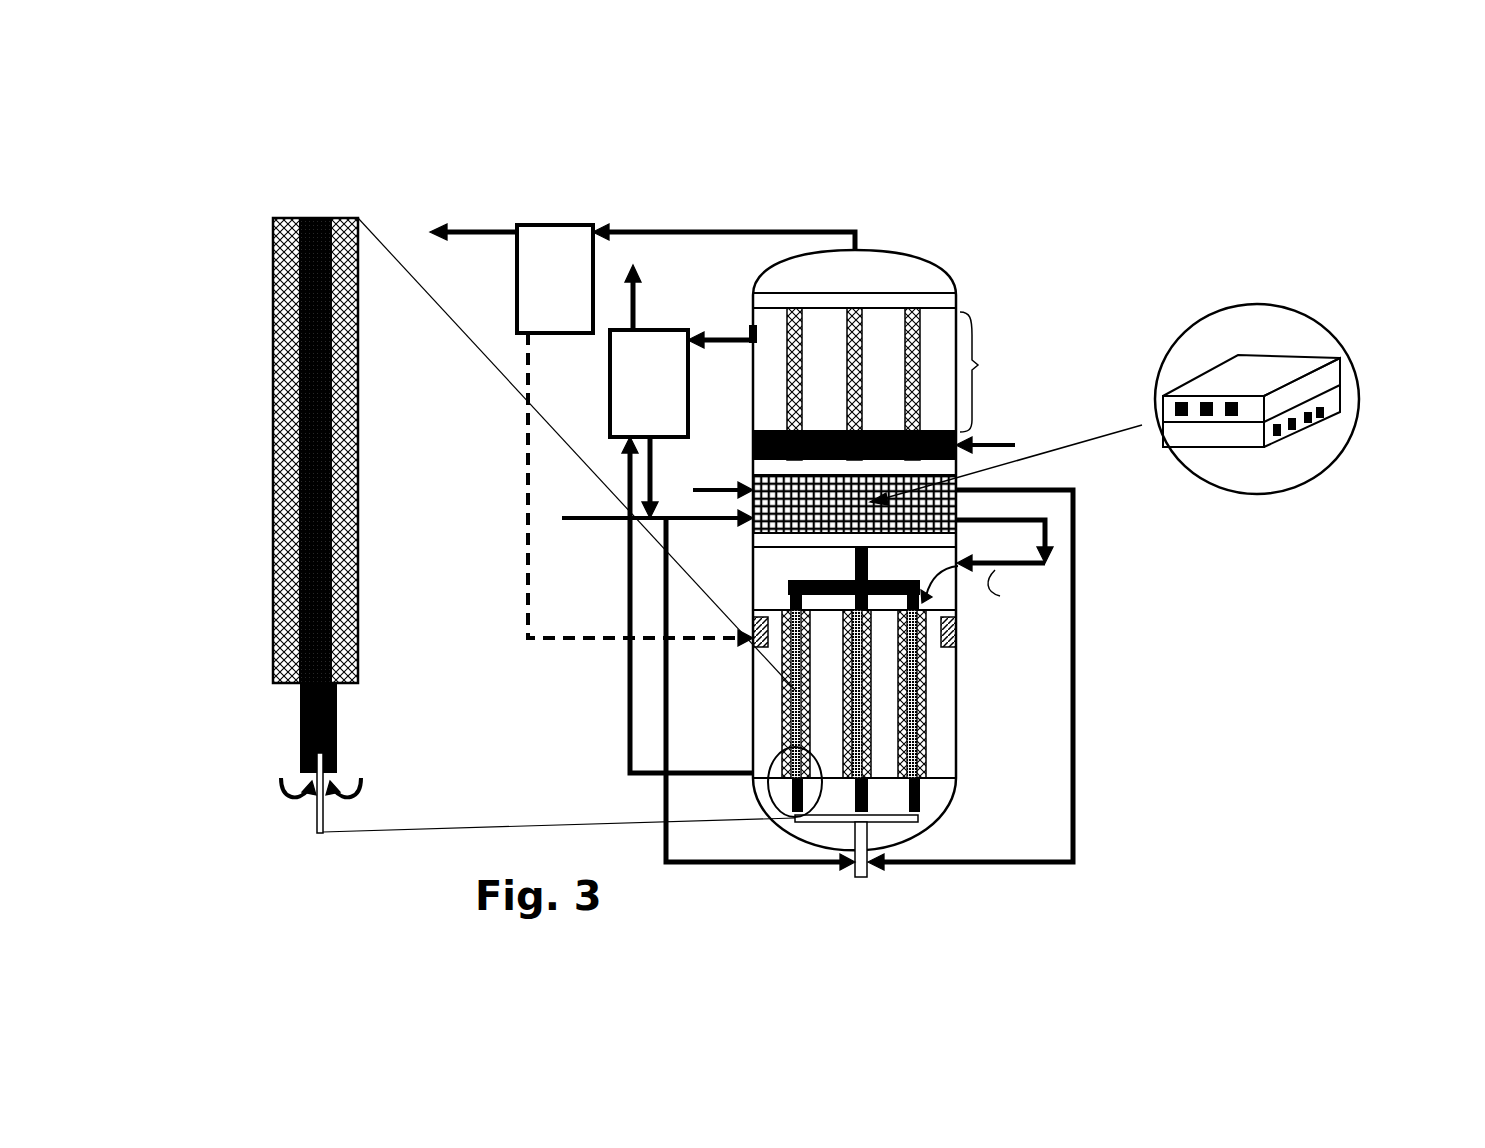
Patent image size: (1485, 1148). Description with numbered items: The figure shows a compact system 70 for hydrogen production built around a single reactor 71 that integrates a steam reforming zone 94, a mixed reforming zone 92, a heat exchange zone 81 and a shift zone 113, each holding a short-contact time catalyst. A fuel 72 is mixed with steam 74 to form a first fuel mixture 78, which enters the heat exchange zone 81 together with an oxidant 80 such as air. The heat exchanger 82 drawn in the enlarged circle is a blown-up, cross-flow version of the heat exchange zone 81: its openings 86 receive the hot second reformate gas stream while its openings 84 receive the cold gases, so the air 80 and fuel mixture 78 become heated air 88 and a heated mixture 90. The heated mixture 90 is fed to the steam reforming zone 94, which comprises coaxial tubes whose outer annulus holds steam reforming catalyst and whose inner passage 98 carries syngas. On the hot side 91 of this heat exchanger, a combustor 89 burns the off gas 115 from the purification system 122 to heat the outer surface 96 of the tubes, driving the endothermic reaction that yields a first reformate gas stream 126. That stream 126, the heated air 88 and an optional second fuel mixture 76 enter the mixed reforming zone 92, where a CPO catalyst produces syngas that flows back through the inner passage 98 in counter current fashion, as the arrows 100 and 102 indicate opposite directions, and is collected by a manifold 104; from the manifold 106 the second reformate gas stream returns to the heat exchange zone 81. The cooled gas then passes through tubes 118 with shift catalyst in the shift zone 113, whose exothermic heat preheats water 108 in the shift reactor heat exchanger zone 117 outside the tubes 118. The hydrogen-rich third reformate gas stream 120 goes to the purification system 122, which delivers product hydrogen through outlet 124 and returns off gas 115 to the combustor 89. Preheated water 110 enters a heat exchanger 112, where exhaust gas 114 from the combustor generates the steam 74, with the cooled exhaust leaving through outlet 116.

The system for hydrogen production 70 is at (170, 170).
The single reactor 71 is at (910, 258).
The fuel 72 is at (590, 522).
The steam 74 is at (655, 470).
The second fuel mixture 76 is at (697, 868).
The first fuel mixture 78 is at (690, 520).
The oxidant 80 is at (717, 482).
The heat exchange zone 81 is at (975, 486).
The heat exchanger 82 is at (1290, 362).
The openings 84 is at (1200, 400).
The openings 86 is at (1283, 436).
The heated air 88 is at (1078, 678).
The combustor 89 is at (957, 640).
The heated mixture 90 is at (1003, 601).
The hot side 91 is at (765, 715).
The mixed reforming zone 92 is at (927, 793).
The steam reforming zone 94 is at (930, 713).
The outer surface 96 is at (930, 745).
The inner passage 98 is at (930, 770).
The arrow 100 is at (272, 610).
The arrow 102 is at (360, 512).
The manifold 104 is at (957, 588).
The manifold 106 is at (868, 560).
The water 108 is at (985, 442).
The preheated water 110 is at (717, 333).
The heat exchanger 112 is at (628, 415).
The shift zone 113 is at (957, 362).
The exhaust gas 114 is at (627, 718).
The off gas 115 is at (528, 540).
The heat exchanger outlet 116 is at (638, 298).
The shift reactor heat exchanger zone 117 is at (1002, 372).
The tubes 118 is at (917, 346).
The third reformate gas stream 120 is at (738, 233).
The purification system 122 is at (548, 235).
The product outlet 124 is at (460, 232).
The first reformate gas stream 126 is at (360, 800).